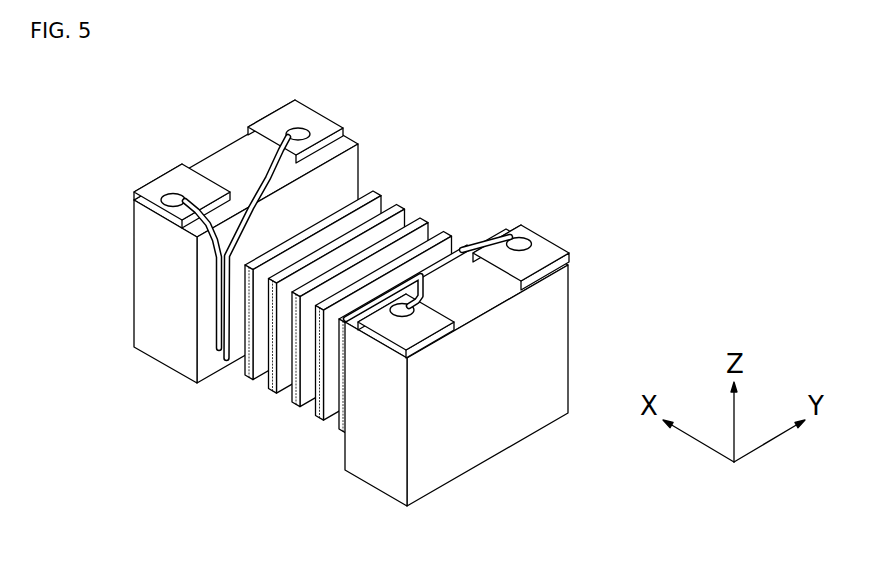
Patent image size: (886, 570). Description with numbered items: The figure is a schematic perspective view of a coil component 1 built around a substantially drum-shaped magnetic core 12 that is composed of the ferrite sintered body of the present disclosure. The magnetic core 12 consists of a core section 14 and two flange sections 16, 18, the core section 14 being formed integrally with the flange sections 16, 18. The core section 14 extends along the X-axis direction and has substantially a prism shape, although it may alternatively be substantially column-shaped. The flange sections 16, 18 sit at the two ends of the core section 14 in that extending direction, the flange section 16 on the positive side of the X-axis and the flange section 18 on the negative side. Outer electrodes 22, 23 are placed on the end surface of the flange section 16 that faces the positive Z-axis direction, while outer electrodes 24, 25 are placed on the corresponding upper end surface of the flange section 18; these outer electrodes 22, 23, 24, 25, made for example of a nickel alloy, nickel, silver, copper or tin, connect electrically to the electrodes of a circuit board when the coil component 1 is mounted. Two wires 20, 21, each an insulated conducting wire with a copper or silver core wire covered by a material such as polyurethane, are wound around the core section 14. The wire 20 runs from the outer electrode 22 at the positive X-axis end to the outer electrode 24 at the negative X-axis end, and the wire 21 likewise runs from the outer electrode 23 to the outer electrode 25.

The coil component 1 is at (337, 294).
The magnetic core 12 is at (447, 389).
The core section 14 is at (338, 183).
The flange section 16 is at (160, 338).
The flange section 18 is at (373, 463).
The wire 20 is at (193, 232).
The wire 21 is at (273, 177).
The outer electrode 22 is at (160, 185).
The outer electrode 23 is at (320, 125).
The outer electrode 24 is at (390, 332).
The outer electrode 25 is at (555, 251).